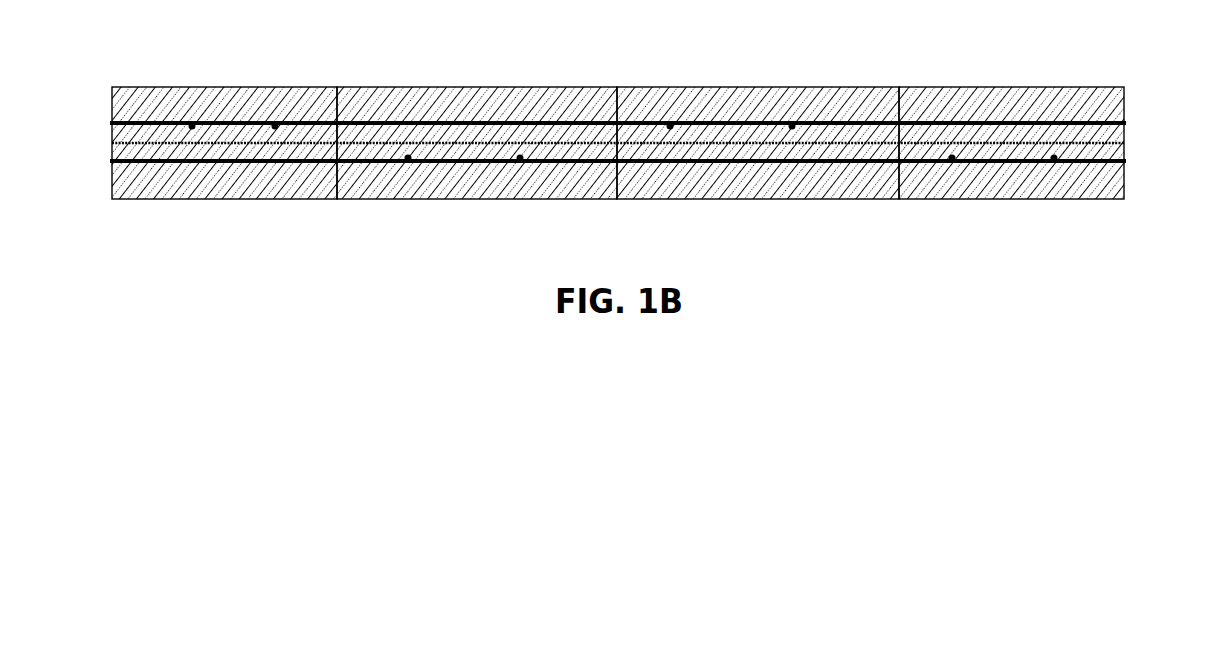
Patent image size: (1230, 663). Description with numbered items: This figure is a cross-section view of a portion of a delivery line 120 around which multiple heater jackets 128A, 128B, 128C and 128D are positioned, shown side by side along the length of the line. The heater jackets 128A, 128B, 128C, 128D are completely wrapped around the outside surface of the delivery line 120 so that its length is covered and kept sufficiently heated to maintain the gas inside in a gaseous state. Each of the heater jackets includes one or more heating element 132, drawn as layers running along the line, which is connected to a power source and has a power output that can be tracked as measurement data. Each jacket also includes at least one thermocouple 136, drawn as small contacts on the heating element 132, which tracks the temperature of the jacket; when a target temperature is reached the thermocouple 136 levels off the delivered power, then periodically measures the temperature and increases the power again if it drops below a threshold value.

The delivery line 120 is at (619, 132).
The heater jacket 128A is at (222, 87).
The heater jacket 128B is at (473, 87).
The heater jacket 128C is at (753, 87).
The heater jacket 128D is at (1008, 87).
The heating element 132 is at (112, 143).
The thermocouple 136 is at (276, 125).